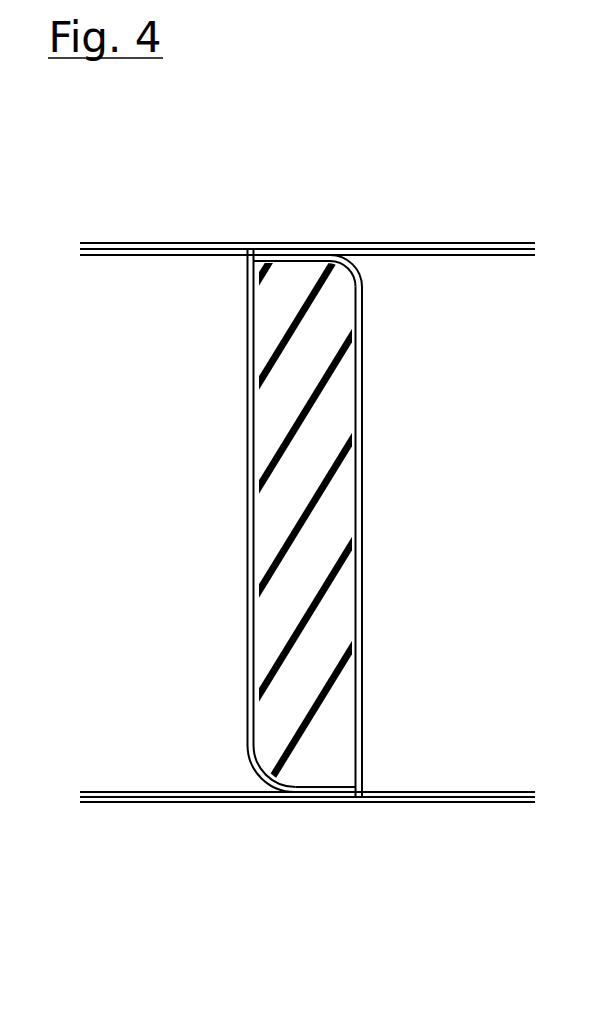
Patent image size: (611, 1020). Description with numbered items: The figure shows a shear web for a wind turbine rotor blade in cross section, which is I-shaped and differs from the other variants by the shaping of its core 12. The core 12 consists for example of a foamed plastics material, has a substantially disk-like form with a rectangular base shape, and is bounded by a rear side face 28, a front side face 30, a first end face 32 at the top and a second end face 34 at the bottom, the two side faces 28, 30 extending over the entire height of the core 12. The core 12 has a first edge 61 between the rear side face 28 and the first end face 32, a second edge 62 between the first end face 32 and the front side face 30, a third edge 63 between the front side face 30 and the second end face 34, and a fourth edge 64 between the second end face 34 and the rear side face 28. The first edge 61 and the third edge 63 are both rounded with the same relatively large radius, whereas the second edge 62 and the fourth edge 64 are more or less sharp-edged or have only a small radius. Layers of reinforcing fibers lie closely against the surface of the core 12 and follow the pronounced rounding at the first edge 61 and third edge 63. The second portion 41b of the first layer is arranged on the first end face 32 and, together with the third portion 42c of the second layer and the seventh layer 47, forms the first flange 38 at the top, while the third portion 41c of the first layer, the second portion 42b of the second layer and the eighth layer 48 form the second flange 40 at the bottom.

The core 12 is at (345, 535).
The rear side face 28 is at (363, 392).
The front side face 30 is at (248, 640).
The first end face 32 is at (293, 252).
The second end face 34 is at (308, 802).
The first flange 38 is at (113, 225).
The second flange 40 is at (507, 820).
The second portion of the first layer 41b is at (163, 247).
The third portion of the first layer 41c is at (419, 787).
The second portion of the second layer 42b is at (470, 803).
The third portion of the second layer 42c is at (133, 262).
The seventh layer 47 is at (462, 242).
The eighth layer 48 is at (158, 803).
The first edge 61 is at (363, 275).
The second edge 62 is at (255, 247).
The third edge 63 is at (250, 765).
The fourth edge 64 is at (362, 803).